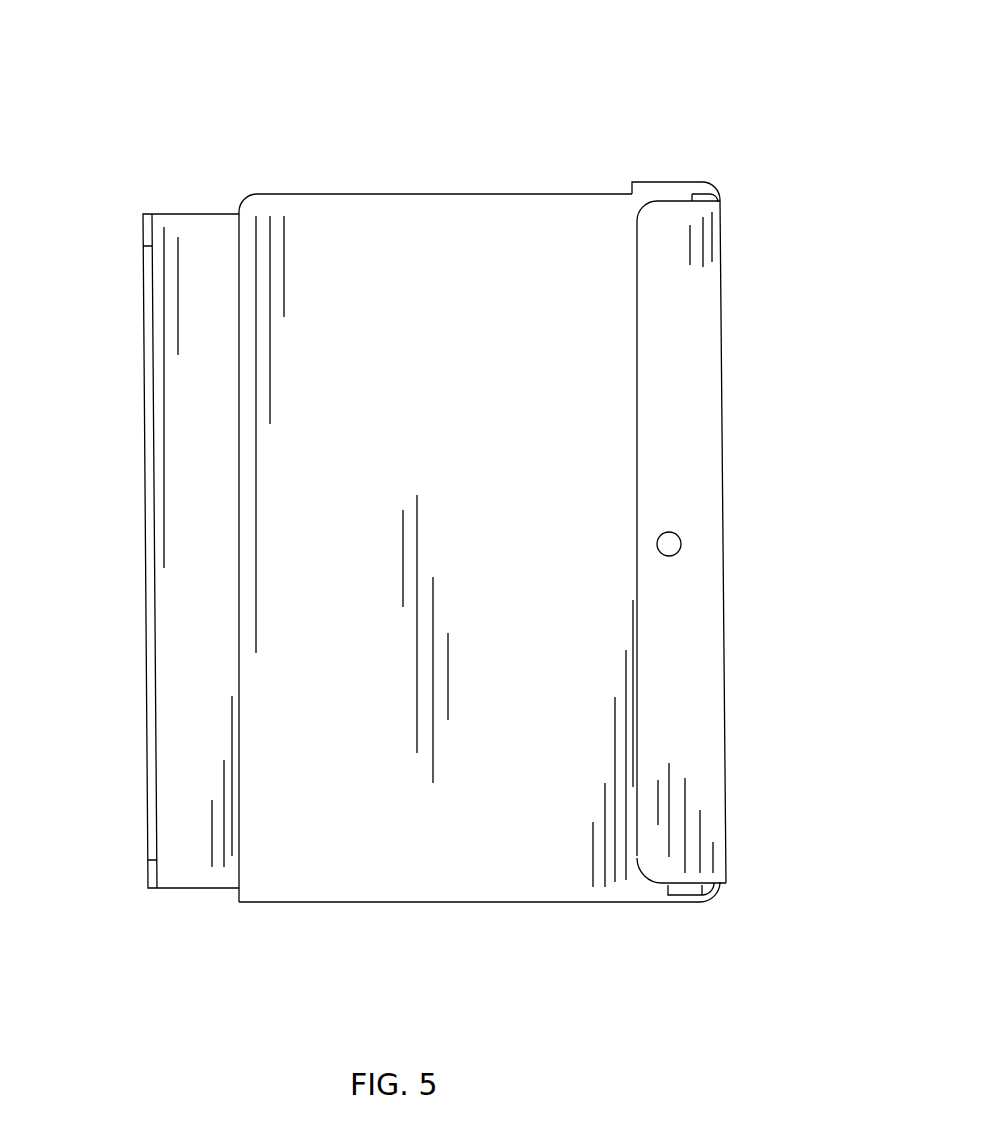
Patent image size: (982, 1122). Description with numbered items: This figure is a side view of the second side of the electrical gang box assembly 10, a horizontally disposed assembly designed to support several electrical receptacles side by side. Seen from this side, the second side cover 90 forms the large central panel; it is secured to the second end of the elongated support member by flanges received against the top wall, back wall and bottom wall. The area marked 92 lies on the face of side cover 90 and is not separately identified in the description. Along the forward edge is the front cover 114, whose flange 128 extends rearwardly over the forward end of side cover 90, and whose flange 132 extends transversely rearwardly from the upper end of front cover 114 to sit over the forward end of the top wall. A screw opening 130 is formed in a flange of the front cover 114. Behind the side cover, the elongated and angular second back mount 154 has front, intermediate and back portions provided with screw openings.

The electrical gang box assembly 10 is at (708, 146).
The second side cover 90 is at (514, 184).
The housing body panel surface 92 is at (388, 236).
The front cover 114 is at (744, 297).
The flange 128 is at (712, 385).
The screw opening 130 is at (682, 545).
The flange 132 is at (664, 181).
The second back mount 154 is at (150, 703).